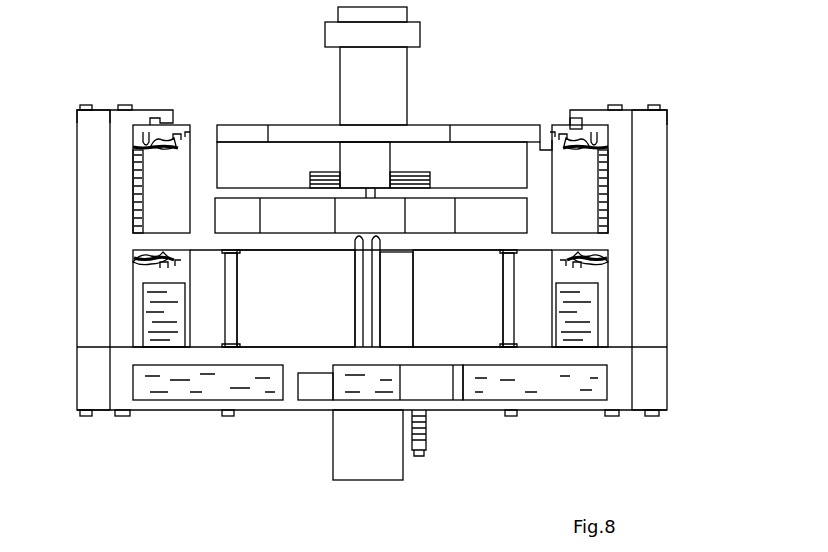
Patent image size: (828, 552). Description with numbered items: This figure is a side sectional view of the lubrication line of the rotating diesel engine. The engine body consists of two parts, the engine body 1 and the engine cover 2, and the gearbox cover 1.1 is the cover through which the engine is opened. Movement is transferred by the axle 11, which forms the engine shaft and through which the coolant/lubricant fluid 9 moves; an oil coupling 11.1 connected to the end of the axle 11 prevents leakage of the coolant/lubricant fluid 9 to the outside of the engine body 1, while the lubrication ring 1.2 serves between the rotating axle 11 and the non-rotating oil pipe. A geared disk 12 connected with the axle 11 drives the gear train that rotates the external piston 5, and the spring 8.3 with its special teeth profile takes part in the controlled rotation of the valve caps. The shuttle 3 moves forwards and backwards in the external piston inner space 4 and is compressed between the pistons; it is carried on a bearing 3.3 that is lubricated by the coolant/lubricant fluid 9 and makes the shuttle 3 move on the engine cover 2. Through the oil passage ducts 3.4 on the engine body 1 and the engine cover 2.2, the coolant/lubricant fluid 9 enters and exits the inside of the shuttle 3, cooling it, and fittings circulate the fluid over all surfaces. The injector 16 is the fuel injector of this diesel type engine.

The engine body 1 is at (655, 198).
The gearbox cover 1.1 is at (608, 105).
The lubrication ring 1.2 is at (578, 118).
The engine cover 2 is at (655, 390).
The engine cover 2.2 is at (575, 340).
The shuttle 3 is at (380, 330).
The bearing 3.3 is at (356, 248).
The oil passage ducts 3.4 is at (368, 233).
The external piston inner space 4 is at (268, 306).
The external piston 5 is at (213, 282).
The spring 8.3 is at (430, 180).
The coolant/lubricant fluid 9 is at (375, 280).
The axle 11 is at (398, 84).
The oil coupling 11.1 is at (410, 35).
The geared disk 12 is at (468, 128).
The injector 16 is at (428, 436).